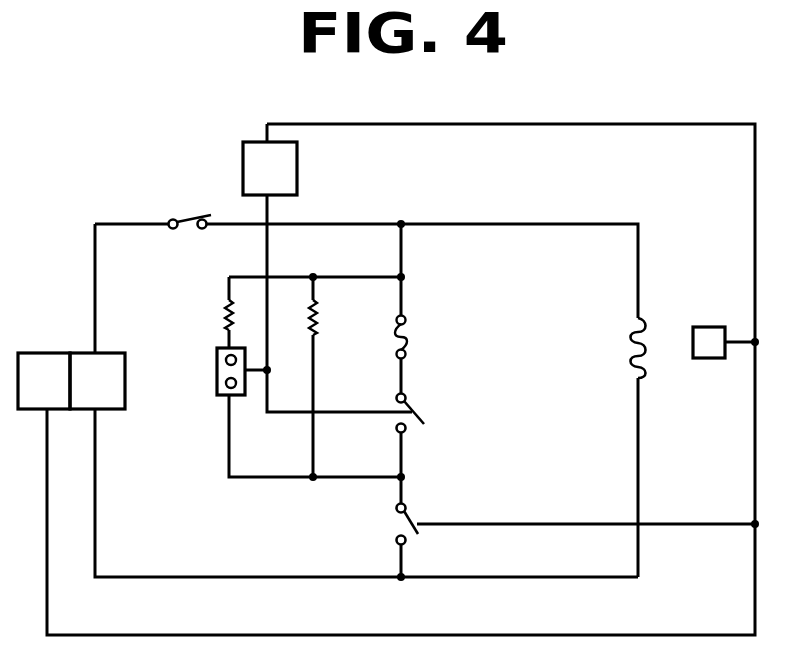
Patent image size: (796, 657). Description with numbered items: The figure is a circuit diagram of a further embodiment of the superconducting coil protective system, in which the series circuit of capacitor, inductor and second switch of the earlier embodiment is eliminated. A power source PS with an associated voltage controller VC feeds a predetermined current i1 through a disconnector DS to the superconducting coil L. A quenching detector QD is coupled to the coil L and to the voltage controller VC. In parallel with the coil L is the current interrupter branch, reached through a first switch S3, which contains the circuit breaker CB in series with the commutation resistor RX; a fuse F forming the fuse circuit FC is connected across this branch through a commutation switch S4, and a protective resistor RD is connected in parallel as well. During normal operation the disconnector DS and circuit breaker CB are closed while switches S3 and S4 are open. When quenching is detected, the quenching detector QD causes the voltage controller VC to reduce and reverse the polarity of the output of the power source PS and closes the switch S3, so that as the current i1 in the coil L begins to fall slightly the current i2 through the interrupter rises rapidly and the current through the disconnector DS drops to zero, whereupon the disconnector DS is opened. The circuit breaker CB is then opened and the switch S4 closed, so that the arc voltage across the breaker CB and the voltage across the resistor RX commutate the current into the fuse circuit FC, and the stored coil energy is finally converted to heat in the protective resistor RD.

The disconnector DS is at (189, 202).
The commutation resistor RX is at (201, 312).
The protective resistor RD is at (338, 315).
The circuit breaker CB is at (208, 371).
The fuse F is at (412, 337).
The commutation switch S4 is at (431, 413).
The fuse circuit FC is at (511, 388).
The first switch S3 is at (385, 524).
The superconducting coil L is at (651, 348).
The quenching detector QD is at (707, 325).
The voltage controller VC is at (44, 381).
The power source PS is at (97, 381).
The current i1 is at (638, 207).
The current i2 is at (419, 548).